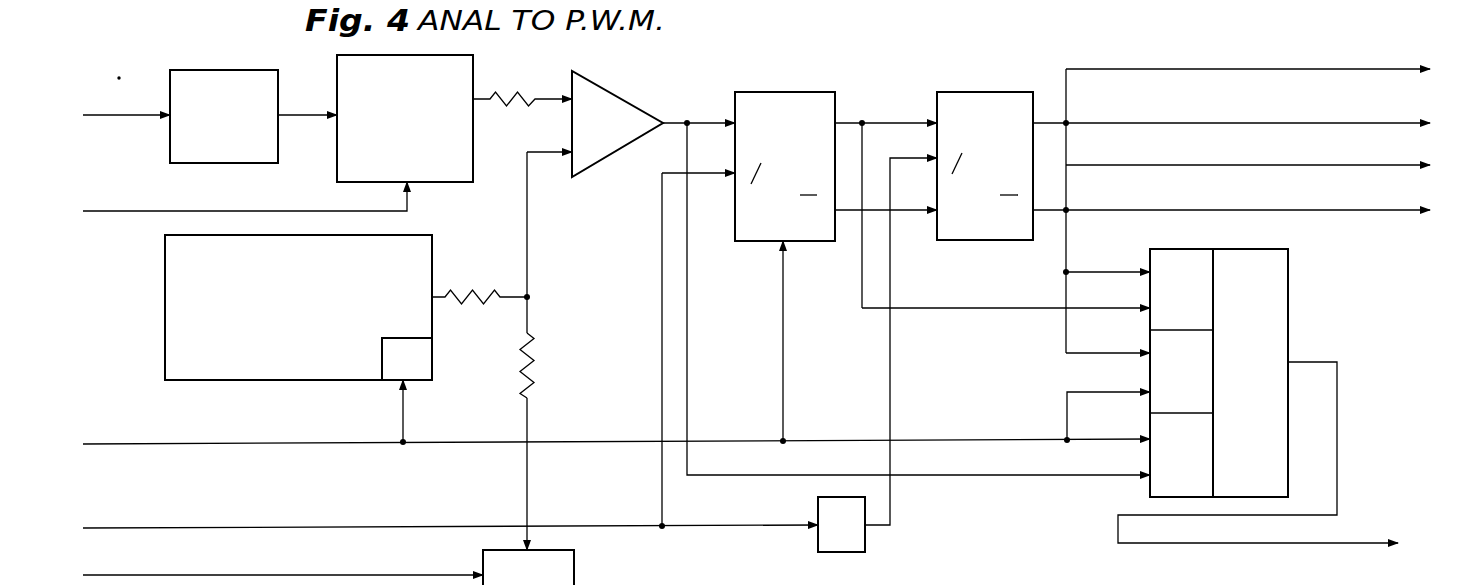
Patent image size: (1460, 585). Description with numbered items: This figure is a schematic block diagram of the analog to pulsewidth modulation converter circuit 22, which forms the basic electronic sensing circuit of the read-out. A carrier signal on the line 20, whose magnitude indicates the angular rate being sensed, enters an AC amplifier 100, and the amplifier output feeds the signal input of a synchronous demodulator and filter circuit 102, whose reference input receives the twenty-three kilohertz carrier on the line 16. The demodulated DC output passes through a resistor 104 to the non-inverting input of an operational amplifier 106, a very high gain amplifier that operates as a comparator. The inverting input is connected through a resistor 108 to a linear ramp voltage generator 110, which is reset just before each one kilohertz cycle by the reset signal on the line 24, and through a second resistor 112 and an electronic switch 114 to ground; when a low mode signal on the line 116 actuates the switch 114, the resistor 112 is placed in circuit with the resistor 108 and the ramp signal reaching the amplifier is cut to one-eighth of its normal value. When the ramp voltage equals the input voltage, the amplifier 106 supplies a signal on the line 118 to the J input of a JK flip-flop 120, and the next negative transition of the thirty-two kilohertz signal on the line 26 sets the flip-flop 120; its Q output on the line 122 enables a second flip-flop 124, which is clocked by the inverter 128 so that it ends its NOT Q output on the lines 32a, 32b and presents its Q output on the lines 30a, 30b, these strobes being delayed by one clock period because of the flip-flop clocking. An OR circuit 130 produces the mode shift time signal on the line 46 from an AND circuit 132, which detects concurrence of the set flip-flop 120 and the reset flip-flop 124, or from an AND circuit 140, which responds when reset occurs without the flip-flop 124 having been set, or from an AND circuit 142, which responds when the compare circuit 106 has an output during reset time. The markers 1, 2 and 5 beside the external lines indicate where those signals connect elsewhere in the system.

The connection from FIG. 1 is at (61, 161).
The connection from FIG. 2 is at (65, 483).
The connection to FIG. 5 is at (740, 554).
The carrier signal line 20 is at (100, 120).
The AC amplifier 100 is at (256, 157).
The carrier reference line 16 is at (279, 214).
The synchronous demodulator and filter circuit 102 is at (465, 61).
The resistor 104 is at (494, 96).
The operational amplifier 106 is at (617, 95).
The comparator output line 118 is at (706, 120).
The analog to pulsewidth modulation converter circuit 22 is at (939, 69).
The JK flip-flop 120 is at (790, 92).
The Q output line 122 is at (885, 120).
The flip-flop 124 is at (996, 92).
The Q output line 30b is at (1110, 50).
The Q output line 30a is at (1106, 122).
The NOT Q output line 32b is at (1100, 166).
The NOT Q output line 32a is at (1231, 193).
The OR circuit 130 is at (1118, 316).
The AND circuit 132 is at (1162, 257).
The AND circuit 140 is at (1150, 367).
The AND circuit 142 is at (1150, 487).
The mode shift time signal line 46 is at (1115, 526).
The linear ramp voltage generator 110 is at (427, 323).
The resistor 108 is at (455, 287).
The second resistor 112 is at (536, 361).
The reset signal line 24 is at (318, 442).
The clock signal line 26 is at (310, 526).
The low mode signal line 116 is at (374, 579).
The electronic switch 114 is at (574, 571).
The inverter 128 is at (863, 545).